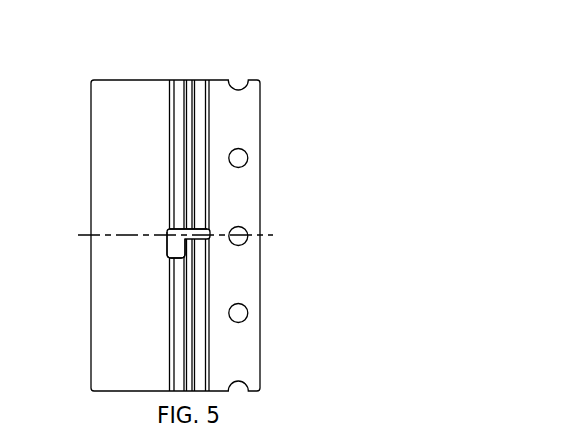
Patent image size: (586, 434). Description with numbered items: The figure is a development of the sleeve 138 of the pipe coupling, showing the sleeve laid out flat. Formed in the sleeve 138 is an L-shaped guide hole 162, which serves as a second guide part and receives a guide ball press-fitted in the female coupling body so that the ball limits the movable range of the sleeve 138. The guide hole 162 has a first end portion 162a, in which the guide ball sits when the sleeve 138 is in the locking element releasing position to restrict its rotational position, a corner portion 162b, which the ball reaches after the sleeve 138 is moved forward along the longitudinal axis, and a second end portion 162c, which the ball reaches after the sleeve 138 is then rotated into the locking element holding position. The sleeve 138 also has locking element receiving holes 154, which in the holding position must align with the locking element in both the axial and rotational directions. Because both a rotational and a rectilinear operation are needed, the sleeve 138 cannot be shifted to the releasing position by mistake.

The sleeve 138 is at (148, 103).
The locking element receiving hole 154 is at (244, 382).
The guide hole 162 is at (105, 223).
The first end portion 162a is at (203, 228).
The corner portion 162b is at (166, 231).
The second end portion 162c is at (166, 256).